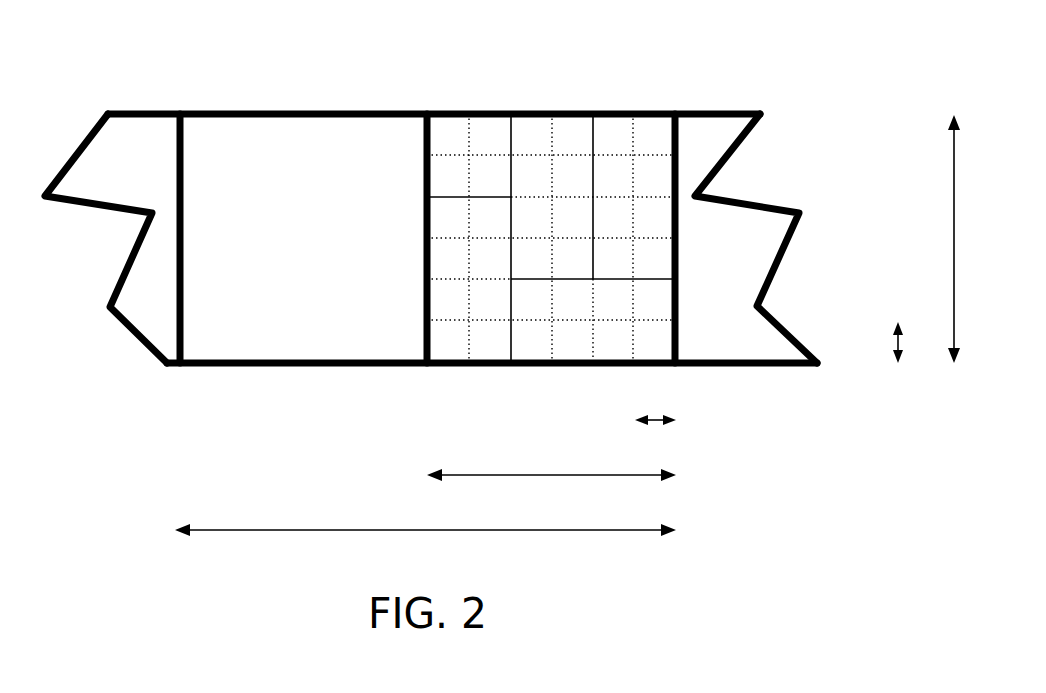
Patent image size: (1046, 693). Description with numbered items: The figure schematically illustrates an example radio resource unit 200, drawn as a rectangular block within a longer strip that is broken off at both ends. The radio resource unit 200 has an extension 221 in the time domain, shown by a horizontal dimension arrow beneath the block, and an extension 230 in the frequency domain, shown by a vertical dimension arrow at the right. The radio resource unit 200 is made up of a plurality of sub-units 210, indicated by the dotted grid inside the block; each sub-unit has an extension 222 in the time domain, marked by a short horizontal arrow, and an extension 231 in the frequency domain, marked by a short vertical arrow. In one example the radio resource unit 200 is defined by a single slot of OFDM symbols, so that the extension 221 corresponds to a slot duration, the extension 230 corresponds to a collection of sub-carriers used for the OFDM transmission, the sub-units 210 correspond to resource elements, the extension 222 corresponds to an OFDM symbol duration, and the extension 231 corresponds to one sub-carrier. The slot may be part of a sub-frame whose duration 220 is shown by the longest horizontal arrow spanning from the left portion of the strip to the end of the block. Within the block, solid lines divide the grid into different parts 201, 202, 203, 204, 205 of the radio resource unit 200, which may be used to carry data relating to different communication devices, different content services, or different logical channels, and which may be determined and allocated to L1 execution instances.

The radio resource unit 200 is at (658, 96).
The part of the radio resource unit 201 is at (469, 155).
The part of the radio resource unit 202 is at (469, 280).
The part of the radio resource unit 203 is at (552, 196).
The part of the radio resource unit 204 is at (634, 196).
The part of the radio resource unit 205 is at (593, 321).
The sub-units 210 is at (524, 132).
The sub-frame duration 220 is at (425, 521).
The extension in a time domain 221 is at (551, 466).
The extension in a time domain of a sub-unit 222 is at (655, 407).
The extension in a frequency domain 230 is at (944, 239).
The extension in a frequency domain of a sub-unit 231 is at (885, 342).